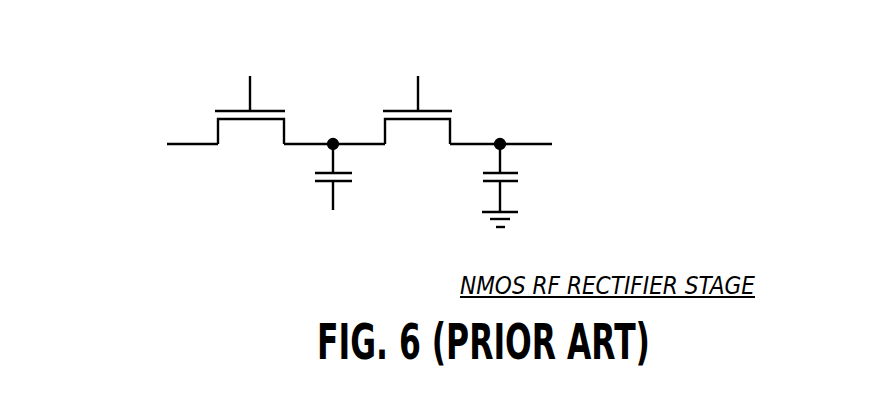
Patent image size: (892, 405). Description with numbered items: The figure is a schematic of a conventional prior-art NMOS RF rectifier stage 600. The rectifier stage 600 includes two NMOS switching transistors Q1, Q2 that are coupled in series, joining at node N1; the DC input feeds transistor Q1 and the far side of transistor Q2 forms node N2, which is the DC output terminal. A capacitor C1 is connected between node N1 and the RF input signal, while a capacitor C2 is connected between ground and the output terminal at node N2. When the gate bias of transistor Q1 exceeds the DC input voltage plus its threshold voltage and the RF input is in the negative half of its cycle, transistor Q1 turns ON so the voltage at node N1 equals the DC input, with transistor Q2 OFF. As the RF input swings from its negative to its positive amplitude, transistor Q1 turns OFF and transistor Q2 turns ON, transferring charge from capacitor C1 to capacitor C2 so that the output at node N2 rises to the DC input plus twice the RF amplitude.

The NMOS RF rectifier stage 600 is at (135, 84).
The NMOS switching transistor Q1 is at (250, 111).
The NMOS switching transistor Q2 is at (417, 111).
The node N1 is at (333, 133).
The node N2 is at (500, 133).
The capacitor C1 is at (348, 177).
The capacitor C2 is at (515, 185).